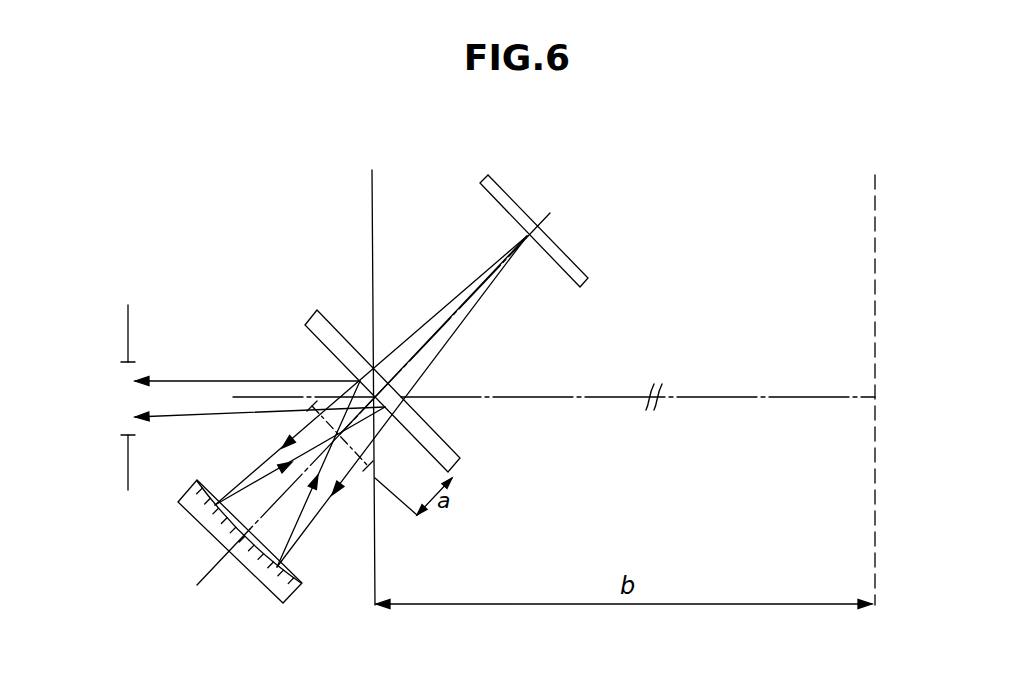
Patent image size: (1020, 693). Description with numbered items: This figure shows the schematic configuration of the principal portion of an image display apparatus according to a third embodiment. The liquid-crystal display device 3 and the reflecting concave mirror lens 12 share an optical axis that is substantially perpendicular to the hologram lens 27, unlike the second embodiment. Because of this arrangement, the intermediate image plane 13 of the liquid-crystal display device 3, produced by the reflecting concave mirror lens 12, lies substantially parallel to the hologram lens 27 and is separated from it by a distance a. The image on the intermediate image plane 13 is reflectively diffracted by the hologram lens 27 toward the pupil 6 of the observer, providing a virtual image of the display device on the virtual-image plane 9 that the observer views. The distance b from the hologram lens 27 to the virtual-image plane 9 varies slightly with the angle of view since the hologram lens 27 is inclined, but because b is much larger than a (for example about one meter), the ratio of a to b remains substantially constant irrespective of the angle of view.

The liquid-crystal display device 3 is at (485, 180).
The hologram lens 27 is at (312, 318).
The intermediate image plane 13 is at (366, 470).
The reflecting concave mirror lens 12 is at (286, 601).
The pupil 6 is at (140, 357).
The virtual-image plane 9 is at (873, 179).